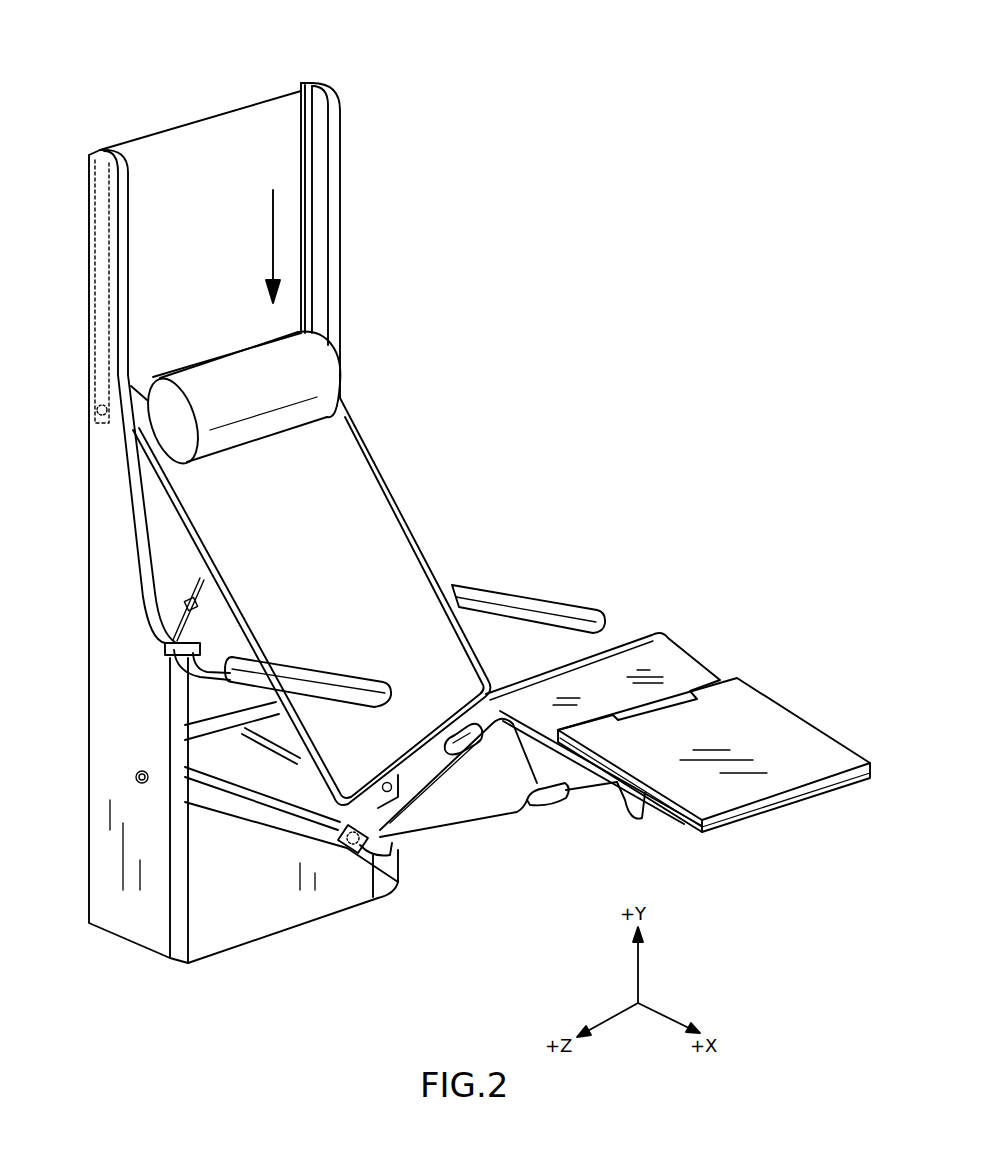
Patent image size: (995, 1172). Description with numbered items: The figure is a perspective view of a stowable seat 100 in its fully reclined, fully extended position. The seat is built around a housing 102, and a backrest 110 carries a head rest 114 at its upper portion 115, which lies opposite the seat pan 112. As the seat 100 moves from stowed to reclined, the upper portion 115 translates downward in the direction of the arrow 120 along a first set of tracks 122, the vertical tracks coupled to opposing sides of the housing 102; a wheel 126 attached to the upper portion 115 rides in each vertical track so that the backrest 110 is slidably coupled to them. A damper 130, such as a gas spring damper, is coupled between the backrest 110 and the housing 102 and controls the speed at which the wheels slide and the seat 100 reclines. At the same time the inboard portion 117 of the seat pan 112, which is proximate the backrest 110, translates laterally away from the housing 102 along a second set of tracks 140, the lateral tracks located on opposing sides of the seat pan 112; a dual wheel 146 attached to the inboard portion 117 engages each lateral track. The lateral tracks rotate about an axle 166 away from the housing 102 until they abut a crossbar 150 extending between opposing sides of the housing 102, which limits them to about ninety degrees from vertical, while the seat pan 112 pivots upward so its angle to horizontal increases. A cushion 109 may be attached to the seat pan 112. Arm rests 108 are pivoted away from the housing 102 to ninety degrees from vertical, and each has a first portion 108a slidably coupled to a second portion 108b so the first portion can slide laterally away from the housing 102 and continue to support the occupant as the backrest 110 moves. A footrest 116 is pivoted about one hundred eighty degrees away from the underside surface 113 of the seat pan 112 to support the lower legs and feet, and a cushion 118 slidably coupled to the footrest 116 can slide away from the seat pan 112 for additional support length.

The stowable seat 100 is at (415, 100).
The housing 102 is at (229, 283).
The arm rests 108 is at (494, 576).
The first portion 108a is at (543, 620).
The second portion 108b is at (195, 673).
The cushion 109 is at (477, 708).
The backrest 110 is at (351, 558).
The seat pan 112 is at (403, 803).
The underside surface 113 is at (541, 778).
The head rest 114 is at (303, 383).
The upper portion 115 is at (143, 400).
The footrest 116 is at (687, 673).
The inboard portion 117 is at (370, 838).
The cushion 118 is at (780, 732).
The arrow 120 is at (273, 217).
The first set of tracks 122 is at (115, 157).
The wheel 126 is at (99, 407).
The damper 130 is at (185, 597).
The second set of tracks 140 is at (262, 745).
The dual wheel 146 is at (355, 850).
The crossbar 150 is at (203, 733).
The axle 166 is at (142, 785).